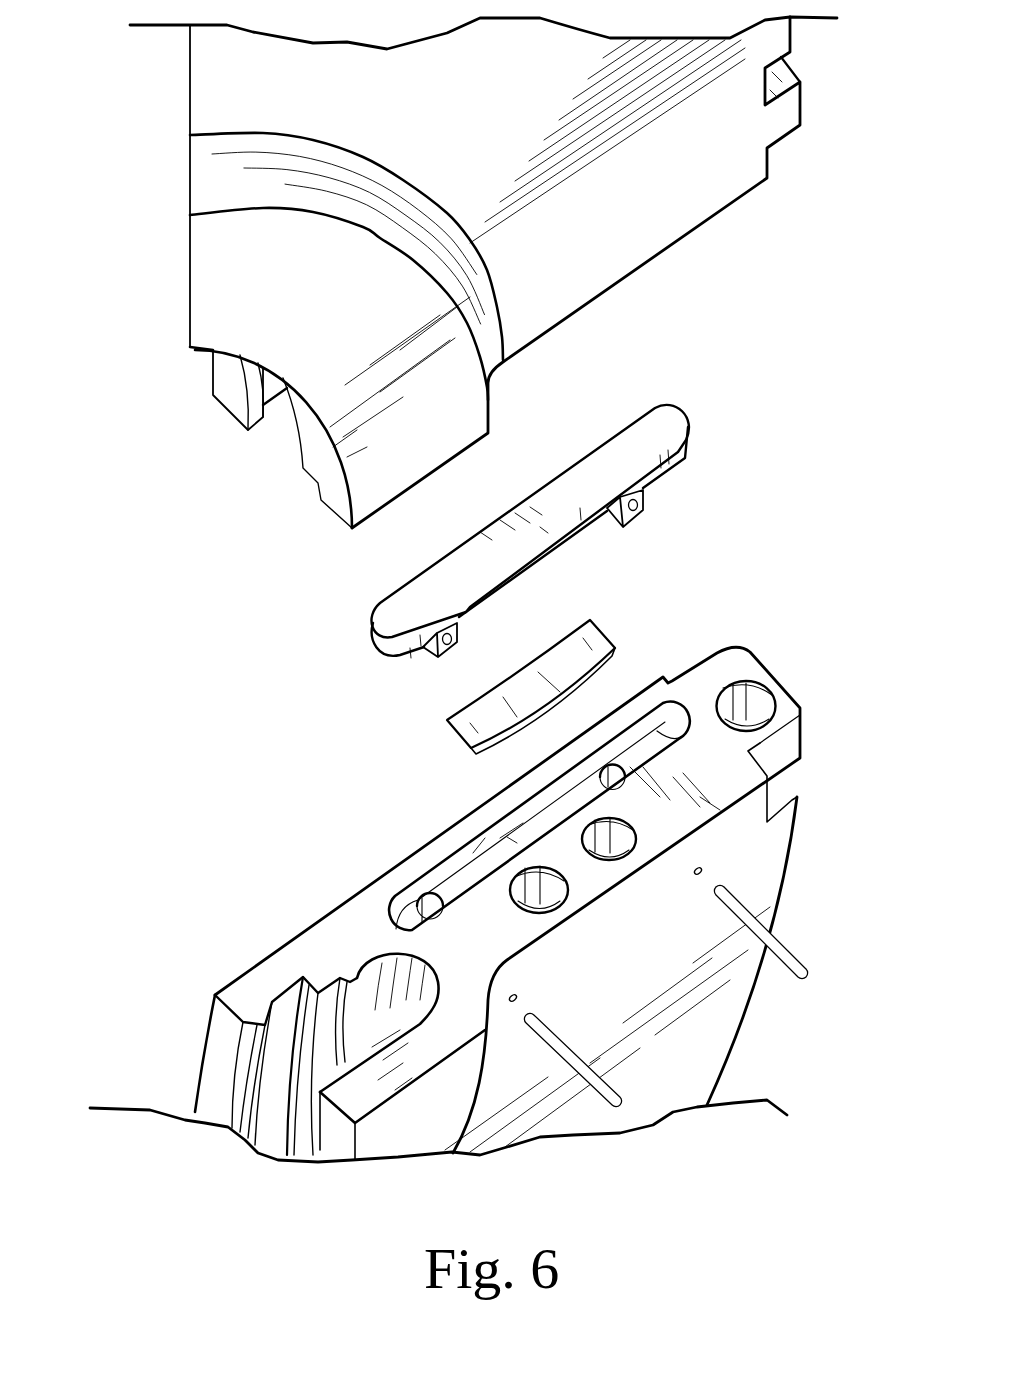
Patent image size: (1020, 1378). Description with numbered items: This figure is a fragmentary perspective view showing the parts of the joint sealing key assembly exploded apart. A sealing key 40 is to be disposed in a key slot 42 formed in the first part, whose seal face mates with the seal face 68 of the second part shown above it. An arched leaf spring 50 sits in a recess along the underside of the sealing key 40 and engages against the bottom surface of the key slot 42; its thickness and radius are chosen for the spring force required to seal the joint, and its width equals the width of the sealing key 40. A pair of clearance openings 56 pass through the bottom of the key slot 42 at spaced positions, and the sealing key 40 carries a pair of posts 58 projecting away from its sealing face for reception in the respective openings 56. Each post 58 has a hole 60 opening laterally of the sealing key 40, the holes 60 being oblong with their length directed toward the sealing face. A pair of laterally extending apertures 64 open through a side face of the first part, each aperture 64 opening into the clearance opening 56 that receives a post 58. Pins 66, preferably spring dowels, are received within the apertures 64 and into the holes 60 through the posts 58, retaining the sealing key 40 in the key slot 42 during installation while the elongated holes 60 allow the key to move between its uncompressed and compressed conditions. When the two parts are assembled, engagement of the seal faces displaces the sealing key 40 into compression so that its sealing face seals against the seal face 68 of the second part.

The sealing key 40 is at (598, 472).
The key slot 42 is at (463, 880).
The leaf spring 50 is at (464, 744).
The clearance openings 56 is at (607, 765).
The posts 58 is at (608, 520).
The holes 60 is at (643, 503).
The apertures 64 is at (703, 869).
The pins 66 is at (785, 968).
The seal face of the second part 68 is at (618, 240).